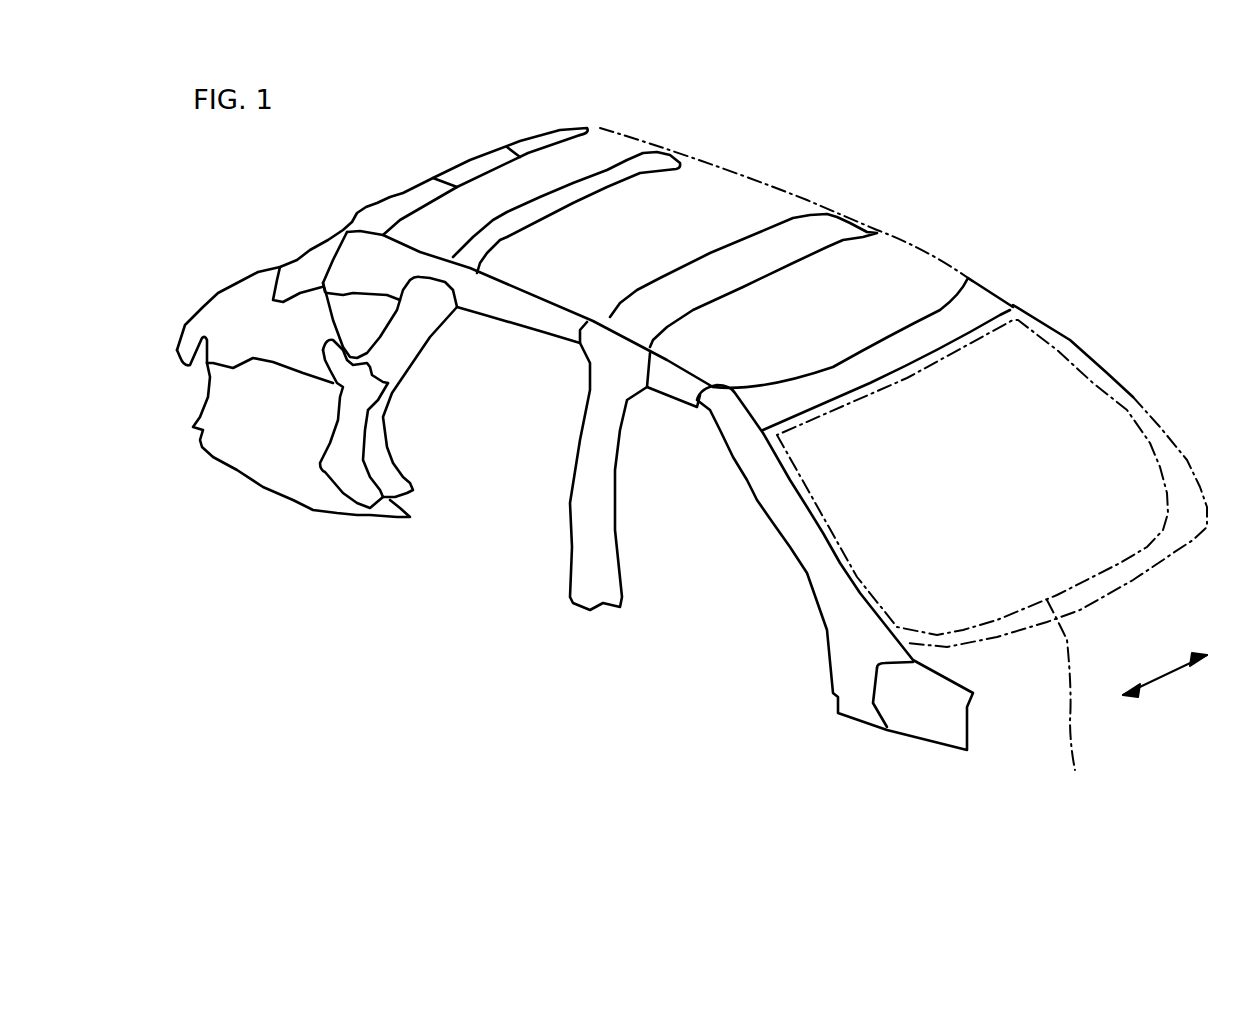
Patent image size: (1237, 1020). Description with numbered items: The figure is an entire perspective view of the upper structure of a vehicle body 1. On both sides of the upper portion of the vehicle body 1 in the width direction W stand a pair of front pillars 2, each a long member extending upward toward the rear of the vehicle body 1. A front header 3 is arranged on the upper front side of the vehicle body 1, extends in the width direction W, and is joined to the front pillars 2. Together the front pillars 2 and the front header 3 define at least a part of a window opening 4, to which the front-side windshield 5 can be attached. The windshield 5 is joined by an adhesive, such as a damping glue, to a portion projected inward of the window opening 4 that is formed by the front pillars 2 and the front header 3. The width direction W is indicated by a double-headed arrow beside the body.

The vehicle body 1 is at (967, 173).
The front pillar 2 is at (1133, 397).
The front header 3 is at (907, 327).
The window opening 4 is at (860, 480).
The windshield 5 is at (1067, 706).
The width direction W is at (1167, 677).